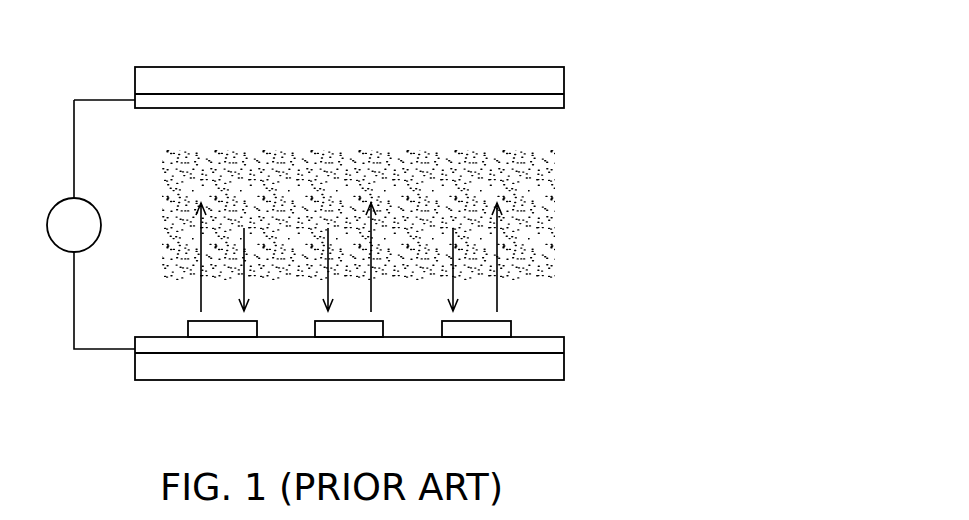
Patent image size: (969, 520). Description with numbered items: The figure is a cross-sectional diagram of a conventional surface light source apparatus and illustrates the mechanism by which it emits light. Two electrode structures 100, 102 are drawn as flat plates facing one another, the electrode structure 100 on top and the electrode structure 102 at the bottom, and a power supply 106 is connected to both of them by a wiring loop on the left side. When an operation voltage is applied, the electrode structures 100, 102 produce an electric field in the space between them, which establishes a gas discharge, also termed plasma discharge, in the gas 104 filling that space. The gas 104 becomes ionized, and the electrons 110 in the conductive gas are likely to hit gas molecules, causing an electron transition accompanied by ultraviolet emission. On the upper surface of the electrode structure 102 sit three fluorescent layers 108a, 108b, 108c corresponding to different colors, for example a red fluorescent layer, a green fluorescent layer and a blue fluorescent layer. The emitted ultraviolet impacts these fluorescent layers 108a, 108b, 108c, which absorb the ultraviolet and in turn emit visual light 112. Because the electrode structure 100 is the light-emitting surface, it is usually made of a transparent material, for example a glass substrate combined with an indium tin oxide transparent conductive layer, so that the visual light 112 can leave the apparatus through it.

The electrode structure 100 is at (564, 72).
The electrode structure 102 is at (564, 343).
The gas 104 is at (532, 222).
The power supply 106 is at (52, 243).
The fluorescent layer 108a is at (223, 330).
The fluorescent layer 108b is at (350, 330).
The fluorescent layer 108c is at (477, 330).
The electrons 110 is at (453, 245).
The visual light 112 is at (498, 238).